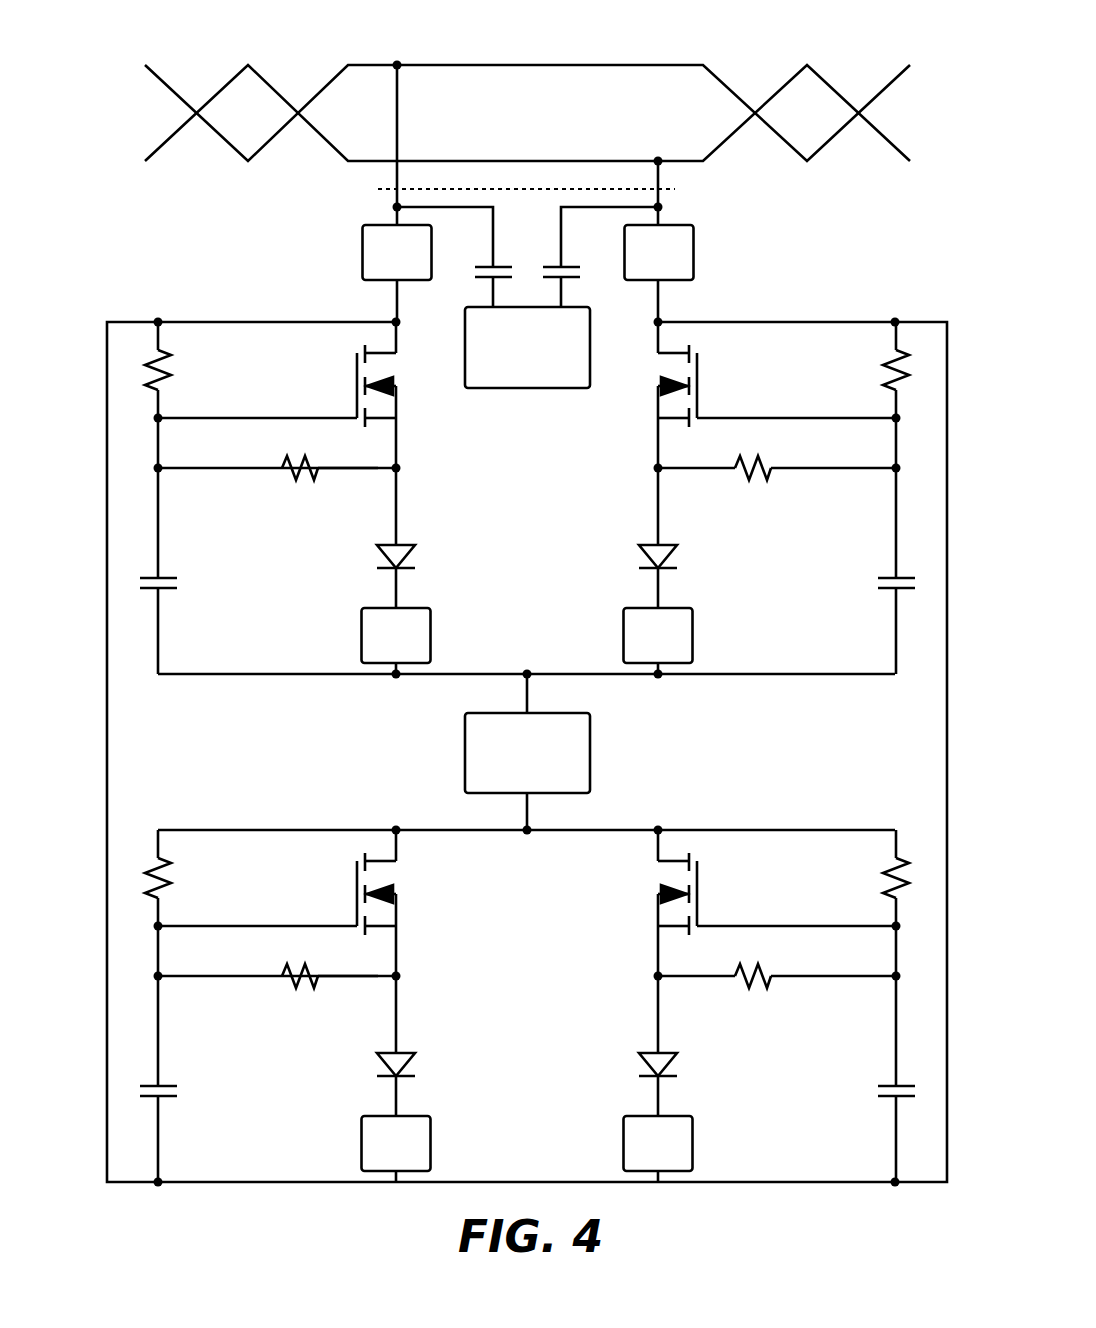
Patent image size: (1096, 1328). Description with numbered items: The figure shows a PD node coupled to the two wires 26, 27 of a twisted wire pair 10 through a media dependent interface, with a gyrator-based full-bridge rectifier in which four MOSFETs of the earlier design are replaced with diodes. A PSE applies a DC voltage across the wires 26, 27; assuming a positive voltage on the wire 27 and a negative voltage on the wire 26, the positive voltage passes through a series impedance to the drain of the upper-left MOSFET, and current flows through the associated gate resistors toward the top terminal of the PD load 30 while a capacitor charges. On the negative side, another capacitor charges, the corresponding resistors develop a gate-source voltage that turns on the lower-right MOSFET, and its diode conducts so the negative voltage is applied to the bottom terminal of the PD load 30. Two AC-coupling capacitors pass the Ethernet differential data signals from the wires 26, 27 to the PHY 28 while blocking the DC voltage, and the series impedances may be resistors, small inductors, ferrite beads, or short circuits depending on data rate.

The twisted wire pair 10 is at (348, 34).
The wire 26 is at (156, 160).
The wire 27 is at (156, 68).
The PHY 28 is at (505, 388).
The PD load 30 is at (465, 745).